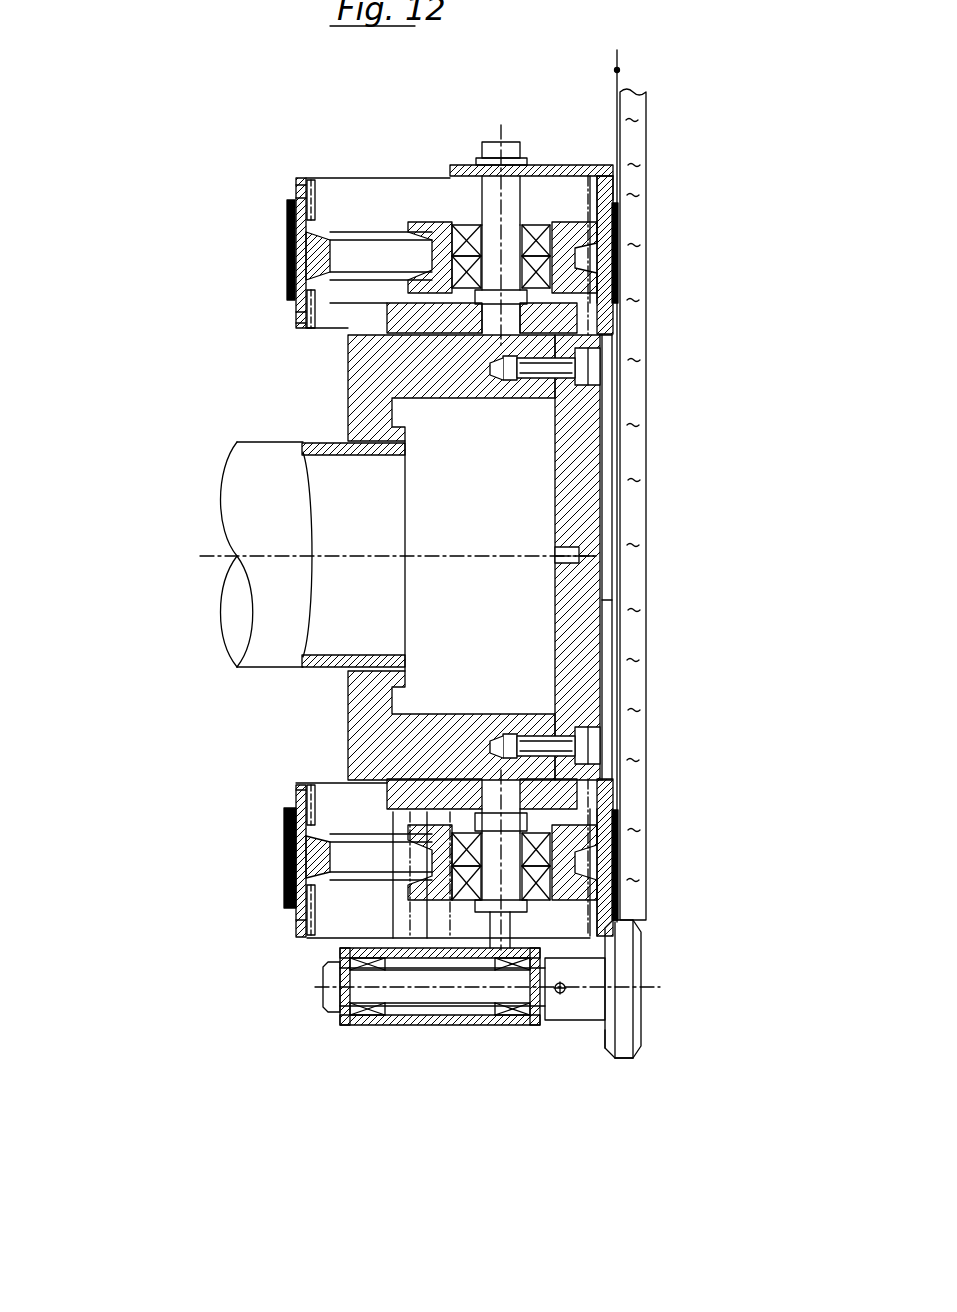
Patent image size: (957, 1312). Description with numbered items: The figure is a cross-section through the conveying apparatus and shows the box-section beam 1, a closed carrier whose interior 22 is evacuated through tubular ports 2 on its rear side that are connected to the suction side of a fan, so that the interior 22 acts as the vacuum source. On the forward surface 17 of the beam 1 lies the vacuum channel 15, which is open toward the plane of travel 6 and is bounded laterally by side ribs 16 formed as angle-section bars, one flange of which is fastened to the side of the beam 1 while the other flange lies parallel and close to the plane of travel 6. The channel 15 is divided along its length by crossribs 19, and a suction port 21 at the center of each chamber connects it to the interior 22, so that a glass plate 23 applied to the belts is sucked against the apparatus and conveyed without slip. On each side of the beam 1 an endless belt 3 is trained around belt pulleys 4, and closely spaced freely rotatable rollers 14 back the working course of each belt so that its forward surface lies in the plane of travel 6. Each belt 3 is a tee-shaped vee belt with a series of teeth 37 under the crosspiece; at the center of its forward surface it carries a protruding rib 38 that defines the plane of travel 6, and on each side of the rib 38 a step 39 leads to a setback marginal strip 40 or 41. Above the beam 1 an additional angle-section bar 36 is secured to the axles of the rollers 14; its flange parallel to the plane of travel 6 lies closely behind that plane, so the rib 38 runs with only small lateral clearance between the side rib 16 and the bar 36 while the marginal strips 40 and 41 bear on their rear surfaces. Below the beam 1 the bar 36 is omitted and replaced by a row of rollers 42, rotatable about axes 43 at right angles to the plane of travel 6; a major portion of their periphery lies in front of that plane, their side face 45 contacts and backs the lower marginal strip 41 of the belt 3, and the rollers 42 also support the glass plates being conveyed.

The carrier 1 is at (365, 403).
The tubular ports 2 is at (258, 522).
The endless belts 3 is at (296, 865).
The belt pulleys 4 is at (363, 178).
The plane of travel 6 is at (617, 70).
The rollers 14 is at (436, 178).
The vacuum channel 15 is at (600, 473).
The side ribs 16 is at (613, 338).
The forward surface 17 is at (609, 620).
The crossribs 19 is at (617, 412).
The suction port 21 is at (593, 541).
The interior 22 is at (495, 541).
The glass plate 23 is at (640, 285).
The angle-section bar 36 is at (617, 188).
The teeth 37 is at (310, 185).
The rib 38 is at (286, 232).
The step 39 is at (296, 198).
The marginal strip 40 is at (296, 183).
The marginal strip 41 is at (296, 323).
The rollers 42 is at (637, 1027).
The axes 43 is at (653, 990).
The side face 45 is at (602, 1038).